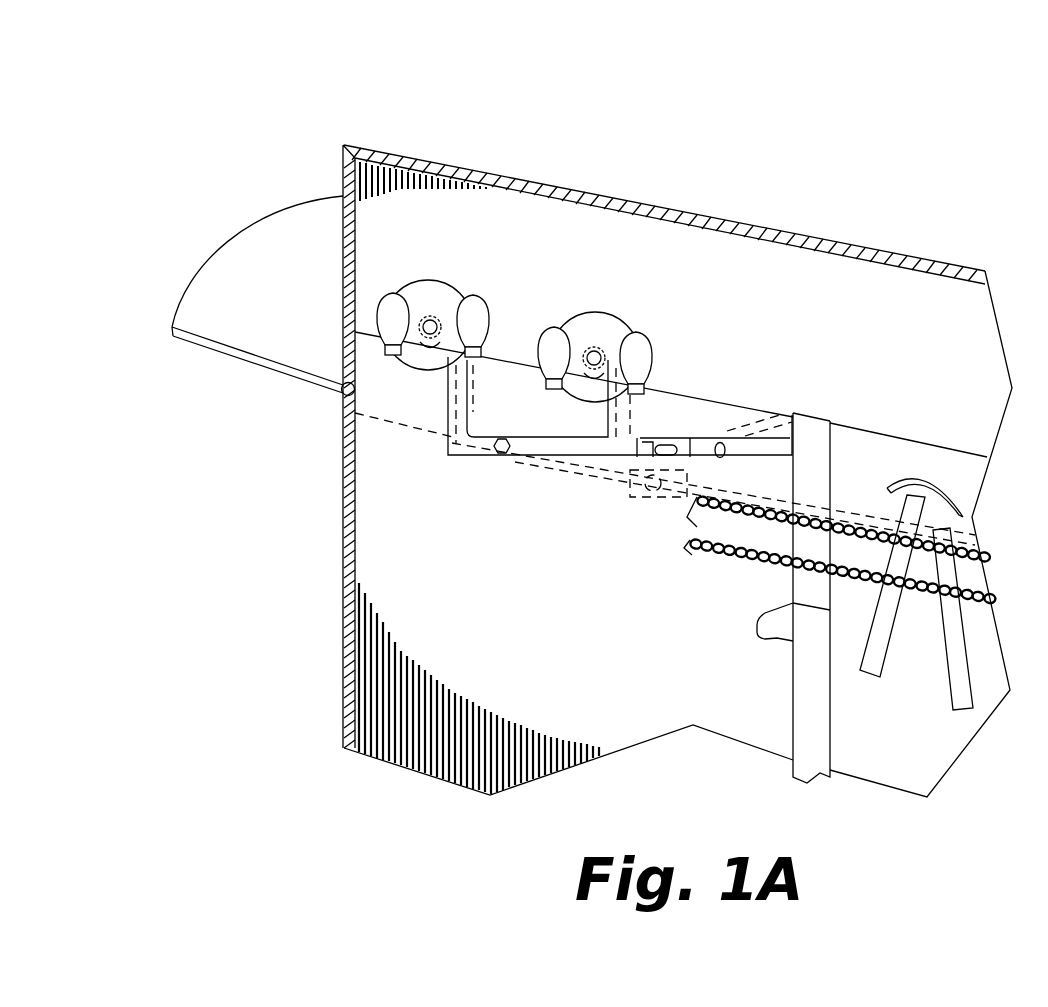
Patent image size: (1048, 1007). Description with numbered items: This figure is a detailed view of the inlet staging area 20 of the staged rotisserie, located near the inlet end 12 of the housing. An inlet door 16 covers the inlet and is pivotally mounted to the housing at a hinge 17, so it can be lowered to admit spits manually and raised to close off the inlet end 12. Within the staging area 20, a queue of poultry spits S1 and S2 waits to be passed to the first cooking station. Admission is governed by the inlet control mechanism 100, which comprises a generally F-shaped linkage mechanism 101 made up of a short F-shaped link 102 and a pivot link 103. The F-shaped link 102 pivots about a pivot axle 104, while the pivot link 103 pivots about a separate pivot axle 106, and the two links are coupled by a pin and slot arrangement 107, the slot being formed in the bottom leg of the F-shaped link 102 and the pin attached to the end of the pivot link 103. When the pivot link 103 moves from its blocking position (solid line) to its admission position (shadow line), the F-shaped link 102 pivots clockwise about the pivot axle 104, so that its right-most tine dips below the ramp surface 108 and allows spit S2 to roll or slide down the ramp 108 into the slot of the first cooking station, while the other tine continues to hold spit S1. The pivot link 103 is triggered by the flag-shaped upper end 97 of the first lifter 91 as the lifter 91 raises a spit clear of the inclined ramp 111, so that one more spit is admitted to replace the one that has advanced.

The inlet end 12 is at (364, 128).
The inlet door 16 is at (258, 370).
The hinge 17 is at (340, 398).
The inlet staging area 20 is at (524, 240).
The inlet control mechanism 100 is at (762, 310).
The F-shaped linkage mechanism 101 is at (511, 492).
The F-shaped link 102 is at (455, 458).
The pivot link 103 is at (800, 416).
The pivot axle 104 is at (515, 456).
The pivot axle 106 is at (720, 441).
The pin and slot arrangement 107 is at (660, 418).
The ramp surface 108 is at (511, 352).
The inclined ramp 111 is at (888, 427).
The lifter 91 is at (810, 742).
The flag-shaped end 97 is at (770, 640).
The spit S1 is at (432, 314).
The spit S2 is at (598, 344).